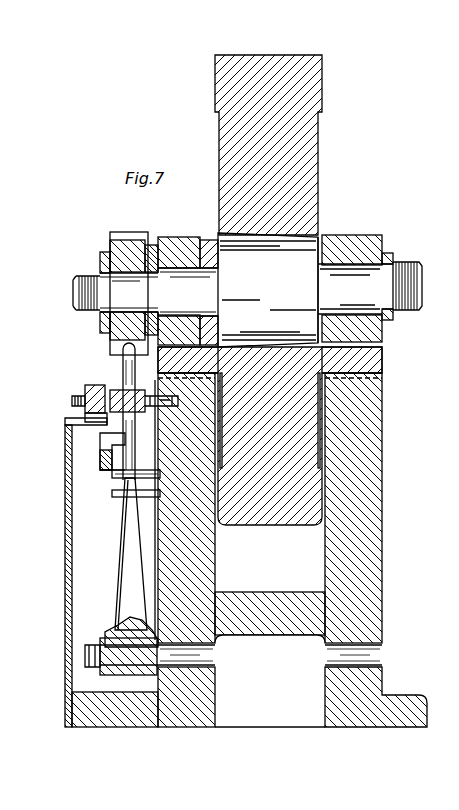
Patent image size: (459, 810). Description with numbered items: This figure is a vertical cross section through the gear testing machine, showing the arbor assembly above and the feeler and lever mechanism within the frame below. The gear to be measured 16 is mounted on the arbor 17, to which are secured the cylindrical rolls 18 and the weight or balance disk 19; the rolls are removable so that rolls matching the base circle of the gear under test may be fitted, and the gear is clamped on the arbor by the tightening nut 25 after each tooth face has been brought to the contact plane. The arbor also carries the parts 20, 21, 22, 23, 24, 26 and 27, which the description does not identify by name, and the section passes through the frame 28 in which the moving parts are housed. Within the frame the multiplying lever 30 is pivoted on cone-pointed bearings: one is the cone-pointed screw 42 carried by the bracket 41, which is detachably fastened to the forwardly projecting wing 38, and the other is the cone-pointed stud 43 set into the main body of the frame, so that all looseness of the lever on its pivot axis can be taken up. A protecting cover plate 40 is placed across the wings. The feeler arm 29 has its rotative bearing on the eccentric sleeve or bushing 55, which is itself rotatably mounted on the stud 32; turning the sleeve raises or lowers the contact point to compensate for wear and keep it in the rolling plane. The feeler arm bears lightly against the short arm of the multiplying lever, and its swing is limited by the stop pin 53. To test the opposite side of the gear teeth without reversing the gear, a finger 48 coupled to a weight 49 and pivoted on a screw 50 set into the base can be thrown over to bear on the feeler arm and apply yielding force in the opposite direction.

The gear to be measured 16 is at (110, 250).
The arbor 17 is at (268, 290).
The cylindrical rolls 18 is at (178, 246).
The weight or balance disk 19 is at (322, 98).
The spacer sleeve 20 is at (218, 288).
The bearing cap ring 21 is at (152, 247).
The shaft journal 22 is at (328, 266).
The threaded shaft end 23 is at (405, 268).
The nut 24 is at (388, 258).
The tightening nut 25 is at (85, 273).
The nut 26 is at (100, 257).
The bearing cap plate 27 is at (372, 368).
The frame 28 is at (365, 578).
The feeler arm 29 is at (131, 518).
The multiplying lever 30 is at (118, 392).
The stud 32 is at (215, 656).
The wing 38 is at (67, 476).
The protecting cover plate 40 is at (66, 540).
The bracket 41 is at (85, 389).
The cone-pointed screw 42 is at (73, 401).
The cone-pointed stud 43 is at (156, 407).
The finger 48 is at (114, 478).
The weight 49 is at (108, 440).
The screw 50 is at (106, 464).
The stop pin 53 is at (116, 496).
The eccentric sleeve or bushing 55 is at (118, 626).